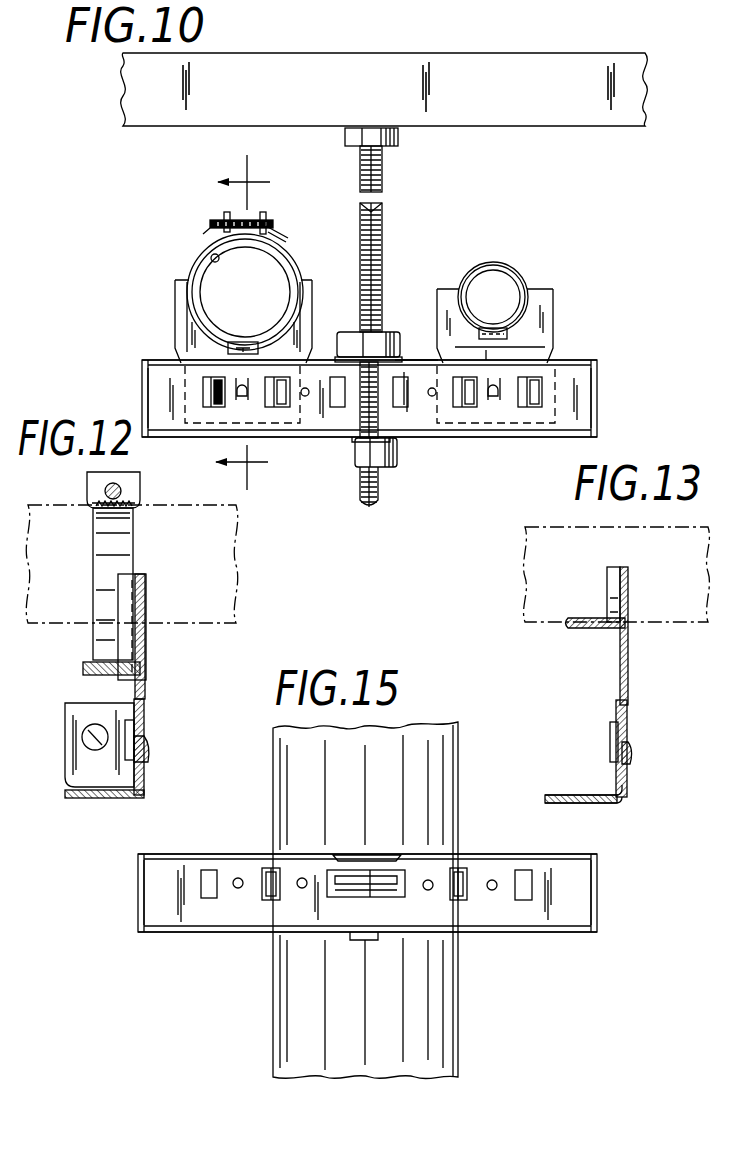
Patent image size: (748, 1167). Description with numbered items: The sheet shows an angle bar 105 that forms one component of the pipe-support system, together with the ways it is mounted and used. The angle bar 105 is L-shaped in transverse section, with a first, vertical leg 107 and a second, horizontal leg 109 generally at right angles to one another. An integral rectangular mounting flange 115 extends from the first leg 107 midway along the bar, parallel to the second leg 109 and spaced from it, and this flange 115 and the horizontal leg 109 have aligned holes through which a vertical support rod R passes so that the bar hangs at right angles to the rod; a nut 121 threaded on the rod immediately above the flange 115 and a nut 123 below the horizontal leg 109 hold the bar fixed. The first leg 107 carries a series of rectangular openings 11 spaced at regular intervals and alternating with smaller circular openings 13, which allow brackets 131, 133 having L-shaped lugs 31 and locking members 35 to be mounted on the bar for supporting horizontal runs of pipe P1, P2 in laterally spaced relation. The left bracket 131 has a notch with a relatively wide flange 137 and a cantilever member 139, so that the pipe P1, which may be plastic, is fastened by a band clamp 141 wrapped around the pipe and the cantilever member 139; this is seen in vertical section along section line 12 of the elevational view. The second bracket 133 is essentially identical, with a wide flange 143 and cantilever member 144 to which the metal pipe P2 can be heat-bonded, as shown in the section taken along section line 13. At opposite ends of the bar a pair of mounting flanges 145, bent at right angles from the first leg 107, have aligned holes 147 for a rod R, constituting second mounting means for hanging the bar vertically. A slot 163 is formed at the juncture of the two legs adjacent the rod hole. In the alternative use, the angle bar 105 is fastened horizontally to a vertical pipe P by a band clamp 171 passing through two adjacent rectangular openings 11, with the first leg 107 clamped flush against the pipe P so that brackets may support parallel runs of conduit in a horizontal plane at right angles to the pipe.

In FIG. 10, the support rod R is at (386, 180).
In FIG. 15, the pipe P is at (440, 1033).
In FIG. 10, the pipe P1 is at (212, 258).
In FIG. 12, the pipe P1 is at (63, 505).
In FIG. 10, the pipe P2 is at (514, 268).
In FIG. 13, the pipe P2 is at (648, 527).
In FIG. 10, the rectangular openings 11 is at (200, 392).
In FIG. 15, the rectangular openings 11 is at (210, 878).
In FIG. 10, the section line 12- 12 is at (247, 322).
In FIG. 10, the circular openings 13 is at (305, 398).
In FIG. 15, the circular openings 13 is at (238, 890).
In FIG. 10, the L-shaped lugs 31 is at (205, 398).
In FIG. 12, the L-shaped lugs 31 is at (88, 734).
In FIG. 13, the L-shaped lugs 31 is at (610, 733).
In FIG. 10, the locking members 35 is at (240, 402).
In FIG. 12, the locking members 35 is at (150, 758).
In FIG. 13, the locking members 35 is at (632, 760).
In FIG. 10, the angle bar 105 is at (602, 382).
In FIG. 15, the angle bar 105 is at (616, 930).
In FIG. 10, the first leg 107 is at (598, 400).
In FIG. 12, the first leg 107 is at (145, 795).
In FIG. 13, the first leg 107 is at (630, 781).
In FIG. 15, the first leg 107 is at (572, 854).
In FIG. 10, the second leg 109 is at (598, 432).
In FIG. 12, the second leg 109 is at (98, 802).
In FIG. 13, the second leg 109 is at (585, 803).
In FIG. 15, the second leg 109 is at (162, 934).
In FIG. 10, the mounting flange 115 is at (402, 350).
In FIG. 15, the mounting flange 115 is at (362, 853).
In FIG. 10, the nut 121 is at (350, 330).
In FIG. 10, the nut 123 is at (383, 470).
In FIG. 10, the bracket 131 is at (172, 298).
In FIG. 10, the second bracket 133 is at (558, 286).
In FIG. 13, the second bracket 133 is at (632, 674).
In FIG. 12, the flange 137 is at (116, 625).
In FIG. 12, the cantilever member 139 is at (132, 670).
In FIG. 10, the band clamp 141 is at (268, 222).
In FIG. 12, the band clamp 141 is at (135, 552).
In FIG. 13, the flange 143 is at (612, 605).
In FIG. 10, the cantilever member 144 is at (507, 340).
In FIG. 13, the cantilever member 144 is at (575, 630).
In FIG. 10, the mounting flanges 145 is at (148, 366).
In FIG. 12, the mounting flanges 145 is at (66, 716).
In FIG. 15, the mounting flanges 145 is at (148, 908).
In FIG. 10, the holes 147 is at (205, 385).
In FIG. 12, the holes 147 is at (86, 742).
In FIG. 10, the slot 163 is at (360, 410).
In FIG. 15, the slot 163 is at (372, 936).
In FIG. 15, the band clamp 171 is at (345, 884).